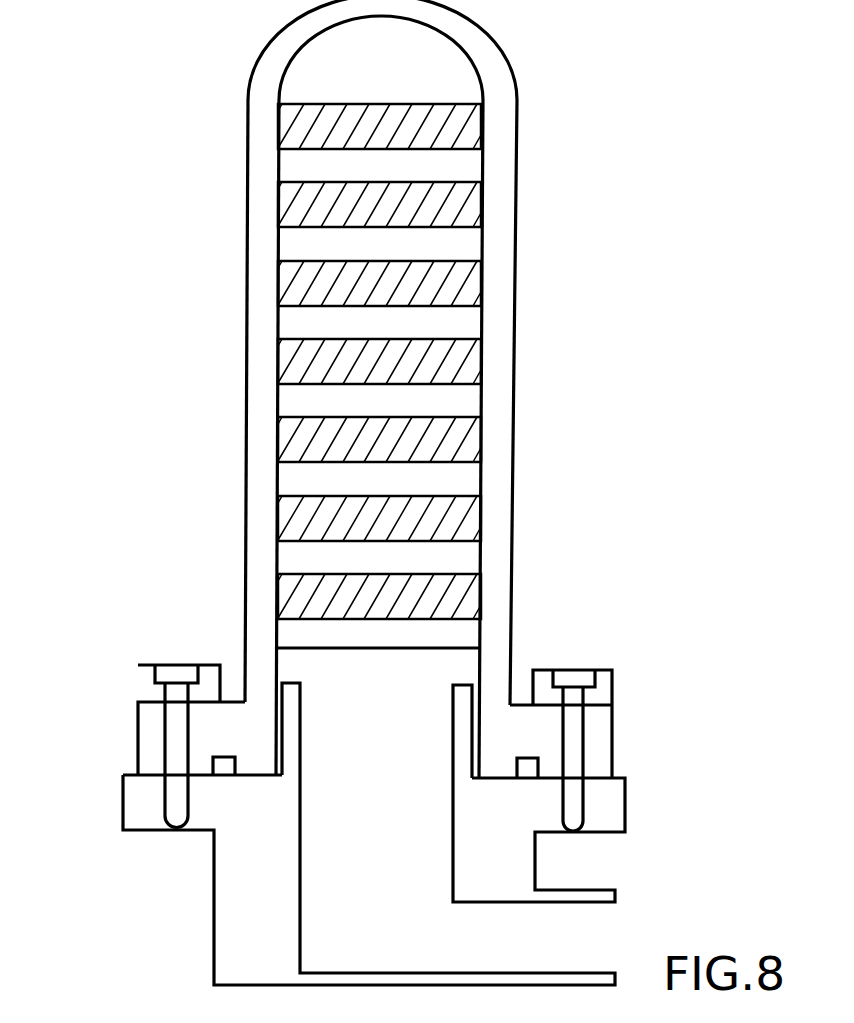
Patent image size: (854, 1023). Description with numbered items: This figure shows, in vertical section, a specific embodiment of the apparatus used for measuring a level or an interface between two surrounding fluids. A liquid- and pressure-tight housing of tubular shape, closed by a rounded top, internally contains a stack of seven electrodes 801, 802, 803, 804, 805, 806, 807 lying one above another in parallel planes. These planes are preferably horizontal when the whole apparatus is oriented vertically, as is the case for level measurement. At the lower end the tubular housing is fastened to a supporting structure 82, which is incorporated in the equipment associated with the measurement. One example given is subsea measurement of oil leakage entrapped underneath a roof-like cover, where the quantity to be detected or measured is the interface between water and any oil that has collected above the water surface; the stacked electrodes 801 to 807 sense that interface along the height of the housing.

The supporting structure 82 is at (213, 932).
The electrode 801 is at (473, 137).
The electrode 802 is at (473, 214).
The electrode 803 is at (473, 292).
The electrode 804 is at (473, 370).
The electrode 805 is at (473, 448).
The electrode 806 is at (473, 525).
The electrode 807 is at (473, 603).